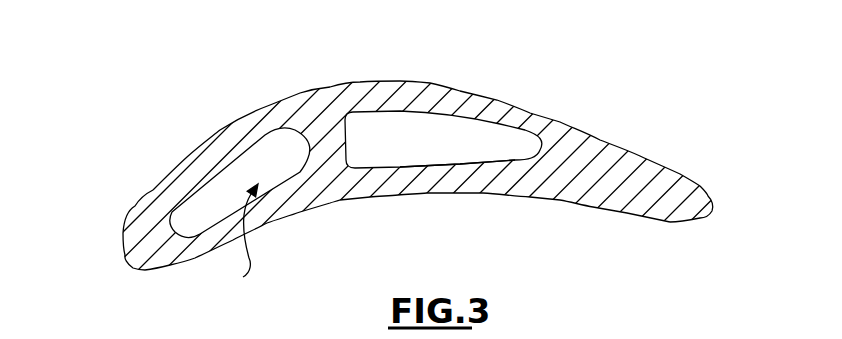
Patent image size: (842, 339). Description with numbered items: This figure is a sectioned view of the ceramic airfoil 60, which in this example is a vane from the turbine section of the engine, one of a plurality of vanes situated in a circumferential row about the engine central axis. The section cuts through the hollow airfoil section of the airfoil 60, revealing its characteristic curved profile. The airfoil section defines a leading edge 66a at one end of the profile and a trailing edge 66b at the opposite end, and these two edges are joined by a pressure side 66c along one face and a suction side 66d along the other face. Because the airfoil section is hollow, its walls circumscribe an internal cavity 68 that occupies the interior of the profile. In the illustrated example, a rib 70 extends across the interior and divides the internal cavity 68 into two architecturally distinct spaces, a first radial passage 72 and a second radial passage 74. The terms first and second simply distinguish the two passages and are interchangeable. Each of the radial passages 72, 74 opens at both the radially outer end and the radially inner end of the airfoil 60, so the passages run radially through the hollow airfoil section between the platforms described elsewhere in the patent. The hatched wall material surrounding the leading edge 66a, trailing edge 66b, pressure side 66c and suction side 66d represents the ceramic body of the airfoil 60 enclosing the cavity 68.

The airfoil 60 is at (622, 88).
The leading edge 66a is at (135, 268).
The trailing edge 66b is at (710, 203).
The pressure side 66c is at (400, 193).
The suction side 66d is at (410, 83).
The internal cavity 68 is at (237, 238).
The rib 70 is at (340, 137).
The first radial passage 72 is at (282, 178).
The second radial passage 74 is at (457, 142).